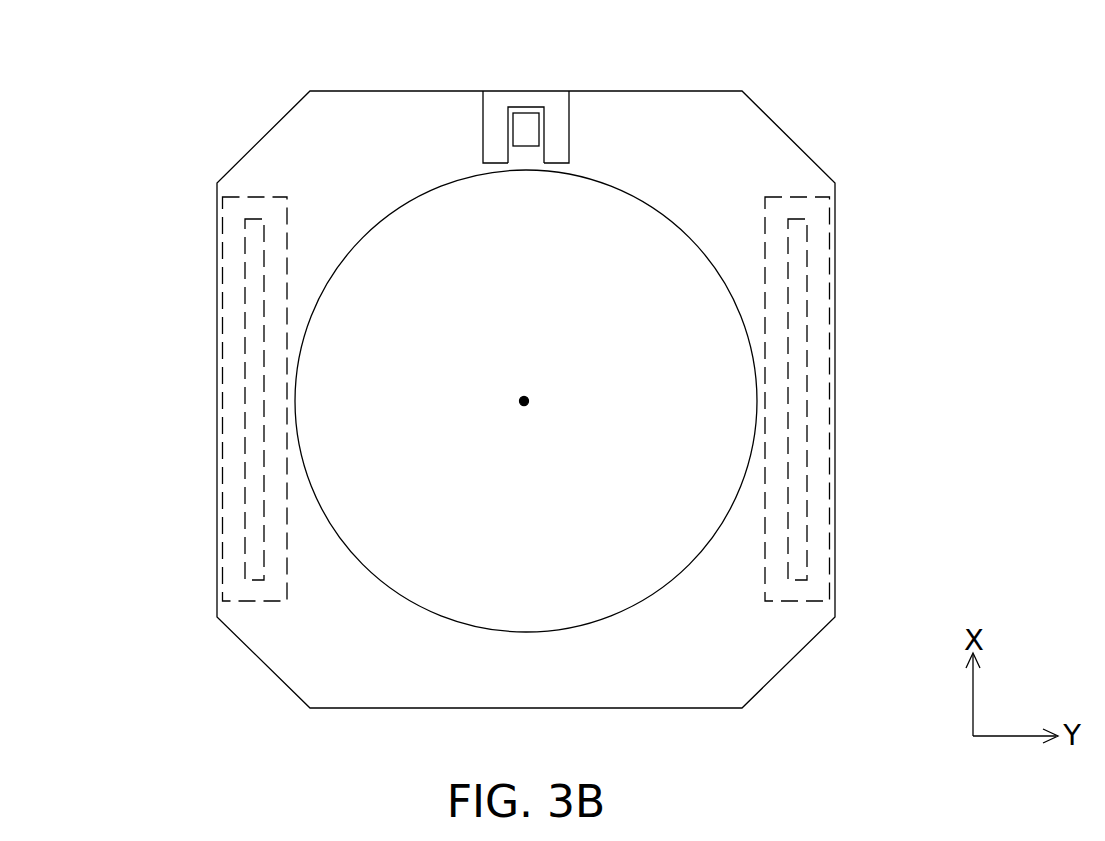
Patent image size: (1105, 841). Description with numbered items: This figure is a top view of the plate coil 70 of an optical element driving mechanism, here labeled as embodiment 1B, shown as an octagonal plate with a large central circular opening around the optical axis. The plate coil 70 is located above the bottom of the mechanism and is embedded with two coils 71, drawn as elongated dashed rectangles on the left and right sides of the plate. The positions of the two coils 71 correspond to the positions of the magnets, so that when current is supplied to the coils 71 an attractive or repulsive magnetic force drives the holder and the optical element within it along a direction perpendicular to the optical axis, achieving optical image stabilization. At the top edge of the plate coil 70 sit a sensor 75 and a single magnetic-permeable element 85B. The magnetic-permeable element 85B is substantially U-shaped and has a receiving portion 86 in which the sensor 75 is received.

The optical element driving mechanism 1B is at (55, 64).
The plate coil 70 is at (678, 668).
The coil 71 is at (233, 377).
The sensor 75 is at (527, 132).
The magnetic-permeable element 85B is at (557, 117).
The receiving portion 86 is at (511, 107).